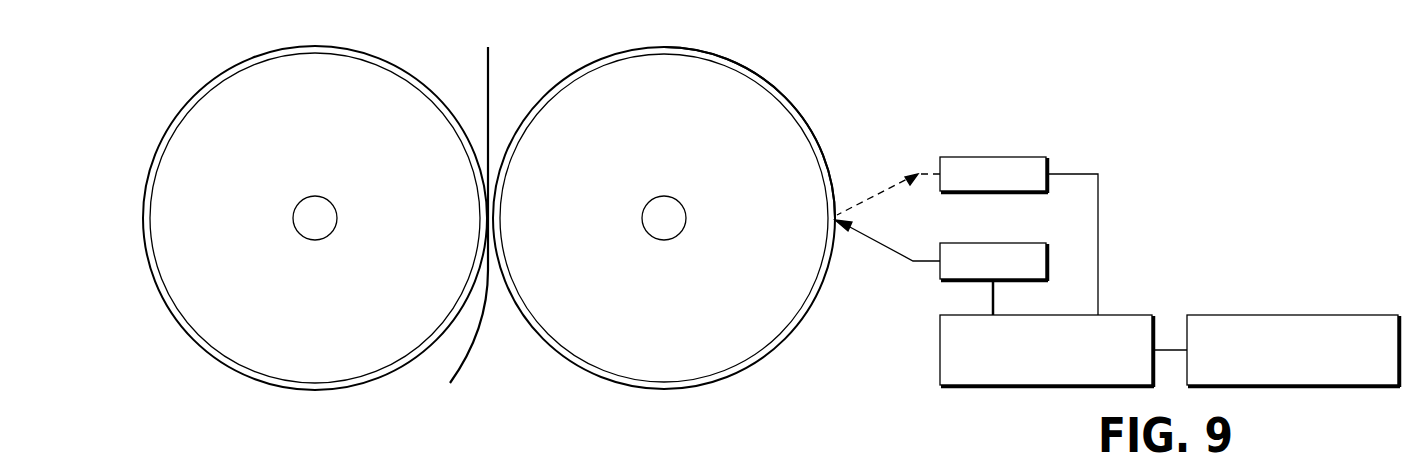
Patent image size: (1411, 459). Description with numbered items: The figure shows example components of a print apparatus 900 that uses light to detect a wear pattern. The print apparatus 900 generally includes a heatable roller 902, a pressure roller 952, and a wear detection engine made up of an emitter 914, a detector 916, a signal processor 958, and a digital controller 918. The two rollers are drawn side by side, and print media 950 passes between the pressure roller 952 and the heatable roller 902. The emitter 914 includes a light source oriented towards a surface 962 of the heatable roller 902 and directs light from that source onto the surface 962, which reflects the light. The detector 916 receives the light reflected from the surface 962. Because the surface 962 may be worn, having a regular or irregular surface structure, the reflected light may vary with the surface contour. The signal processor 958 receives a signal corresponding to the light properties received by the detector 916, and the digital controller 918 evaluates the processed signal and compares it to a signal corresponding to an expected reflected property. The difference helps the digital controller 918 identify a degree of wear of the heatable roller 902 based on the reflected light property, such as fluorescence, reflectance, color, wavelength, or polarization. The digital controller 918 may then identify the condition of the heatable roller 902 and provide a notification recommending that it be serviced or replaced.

The print apparatus 900 is at (135, 110).
The pressure roller 952 is at (333, 150).
The heatable roller 902 is at (683, 150).
The print media 950 is at (471, 352).
The surface 962 is at (777, 79).
The detector 916 is at (995, 157).
The emitter 914 is at (1000, 243).
The signal processor 958 is at (940, 353).
The digital controller 918 is at (1295, 315).